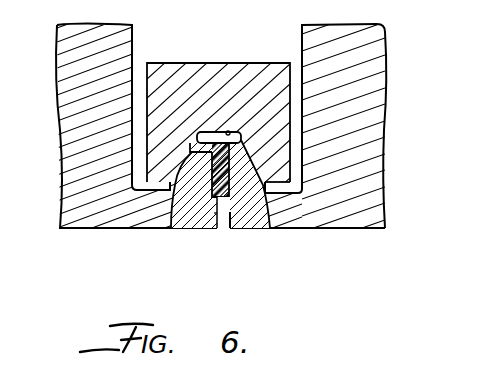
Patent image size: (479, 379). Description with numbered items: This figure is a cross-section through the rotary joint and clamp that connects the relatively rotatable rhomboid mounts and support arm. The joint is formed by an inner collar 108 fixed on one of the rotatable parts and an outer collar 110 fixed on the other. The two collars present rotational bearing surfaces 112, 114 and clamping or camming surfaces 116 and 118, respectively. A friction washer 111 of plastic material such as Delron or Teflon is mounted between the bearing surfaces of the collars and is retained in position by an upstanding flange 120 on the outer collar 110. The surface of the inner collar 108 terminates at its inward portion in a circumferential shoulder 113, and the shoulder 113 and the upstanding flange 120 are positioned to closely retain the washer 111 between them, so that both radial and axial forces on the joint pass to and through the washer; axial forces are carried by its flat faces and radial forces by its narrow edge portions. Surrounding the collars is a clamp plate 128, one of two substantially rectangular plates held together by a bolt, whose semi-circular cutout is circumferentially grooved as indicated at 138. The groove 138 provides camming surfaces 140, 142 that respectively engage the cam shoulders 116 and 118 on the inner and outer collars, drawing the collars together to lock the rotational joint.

The inner collar 108 is at (120, 226).
The outer collar 110 is at (386, 190).
The friction washer 111 is at (222, 200).
The rotational bearing surface 112 is at (205, 200).
The circumferential shoulder 113 is at (212, 215).
The rotational bearing surface 114 is at (256, 200).
The clamping or camming surface 116 is at (172, 216).
The clamping or camming surface 118 is at (265, 196).
The upstanding flange 120 is at (202, 131).
The clamp plate 128 is at (178, 46).
The circumferential groove 138 is at (229, 131).
The camming surface 140 is at (196, 141).
The camming surface 142 is at (257, 166).